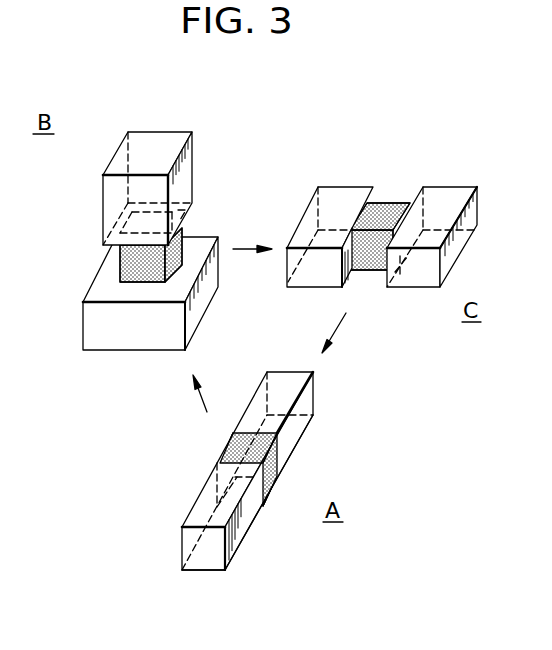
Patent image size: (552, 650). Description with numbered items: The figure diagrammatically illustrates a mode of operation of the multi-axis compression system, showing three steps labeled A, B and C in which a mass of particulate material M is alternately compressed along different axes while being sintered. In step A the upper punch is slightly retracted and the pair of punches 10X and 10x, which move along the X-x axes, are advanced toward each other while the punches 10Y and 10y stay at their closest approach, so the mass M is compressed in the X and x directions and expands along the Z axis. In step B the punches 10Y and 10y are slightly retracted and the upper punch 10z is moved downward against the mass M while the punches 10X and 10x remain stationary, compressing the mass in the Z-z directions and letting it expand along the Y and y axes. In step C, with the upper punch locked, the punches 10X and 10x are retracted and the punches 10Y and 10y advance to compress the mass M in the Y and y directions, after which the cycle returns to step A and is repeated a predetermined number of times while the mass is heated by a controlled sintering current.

The upper block with rectangular recess 10z is at (160, 138).
The mass of particulate material M is at (120, 268).
The punch 10y is at (332, 192).
The punch 10Y is at (460, 190).
The punch 10x is at (292, 442).
The punch 10X is at (243, 535).